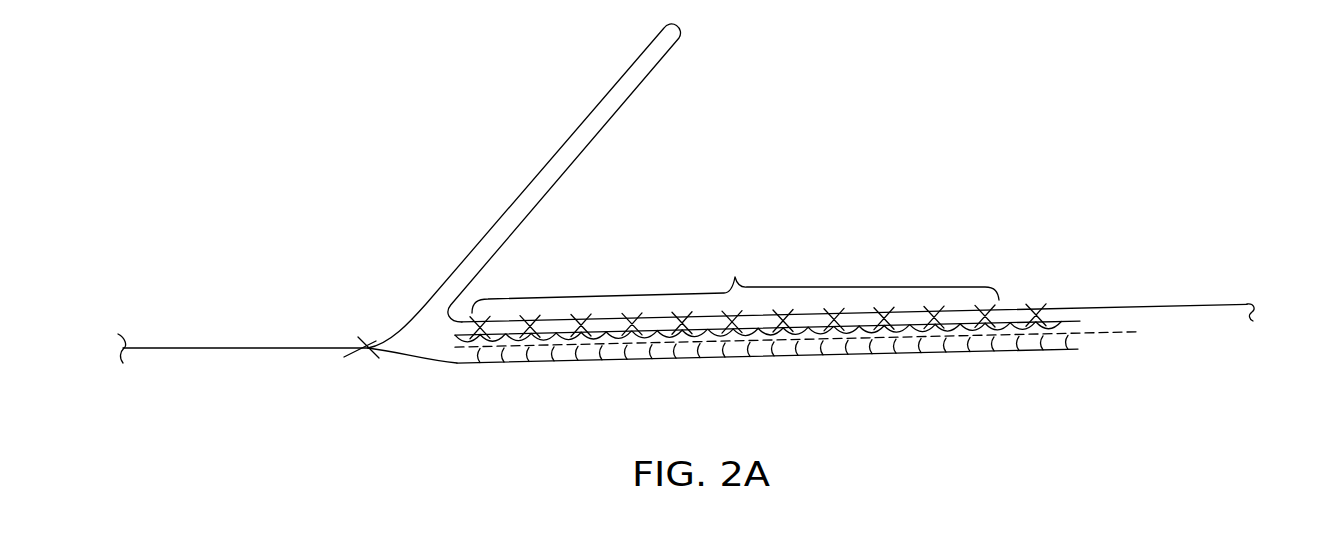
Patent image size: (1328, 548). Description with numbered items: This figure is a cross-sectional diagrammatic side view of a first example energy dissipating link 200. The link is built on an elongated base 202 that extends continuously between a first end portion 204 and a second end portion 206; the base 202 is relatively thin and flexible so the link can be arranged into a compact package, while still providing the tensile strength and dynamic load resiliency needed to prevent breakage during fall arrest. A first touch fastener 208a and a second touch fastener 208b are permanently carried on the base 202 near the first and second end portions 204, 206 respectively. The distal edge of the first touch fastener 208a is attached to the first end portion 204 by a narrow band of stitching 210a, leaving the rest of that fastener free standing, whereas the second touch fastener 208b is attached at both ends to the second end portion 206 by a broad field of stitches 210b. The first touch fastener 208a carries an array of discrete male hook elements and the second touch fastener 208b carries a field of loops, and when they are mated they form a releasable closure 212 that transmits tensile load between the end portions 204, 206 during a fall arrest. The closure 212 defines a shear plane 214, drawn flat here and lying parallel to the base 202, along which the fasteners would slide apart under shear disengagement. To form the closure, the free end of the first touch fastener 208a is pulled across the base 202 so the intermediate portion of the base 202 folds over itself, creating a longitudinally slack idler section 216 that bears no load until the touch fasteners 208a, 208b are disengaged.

The energy dissipating link 200 is at (306, 66).
The elongated base 202 is at (279, 337).
The first end portion 204 is at (117, 340).
The second end portion 206 is at (1250, 300).
The first touch fastener 208a is at (937, 362).
The second touch fastener 208b is at (1056, 345).
The narrow band of stitching 210a is at (368, 354).
The broad field of stitches 210b is at (758, 293).
The releasable closure 212 is at (1102, 319).
The shear plane 214 is at (1026, 333).
The idler section 216 is at (630, 67).